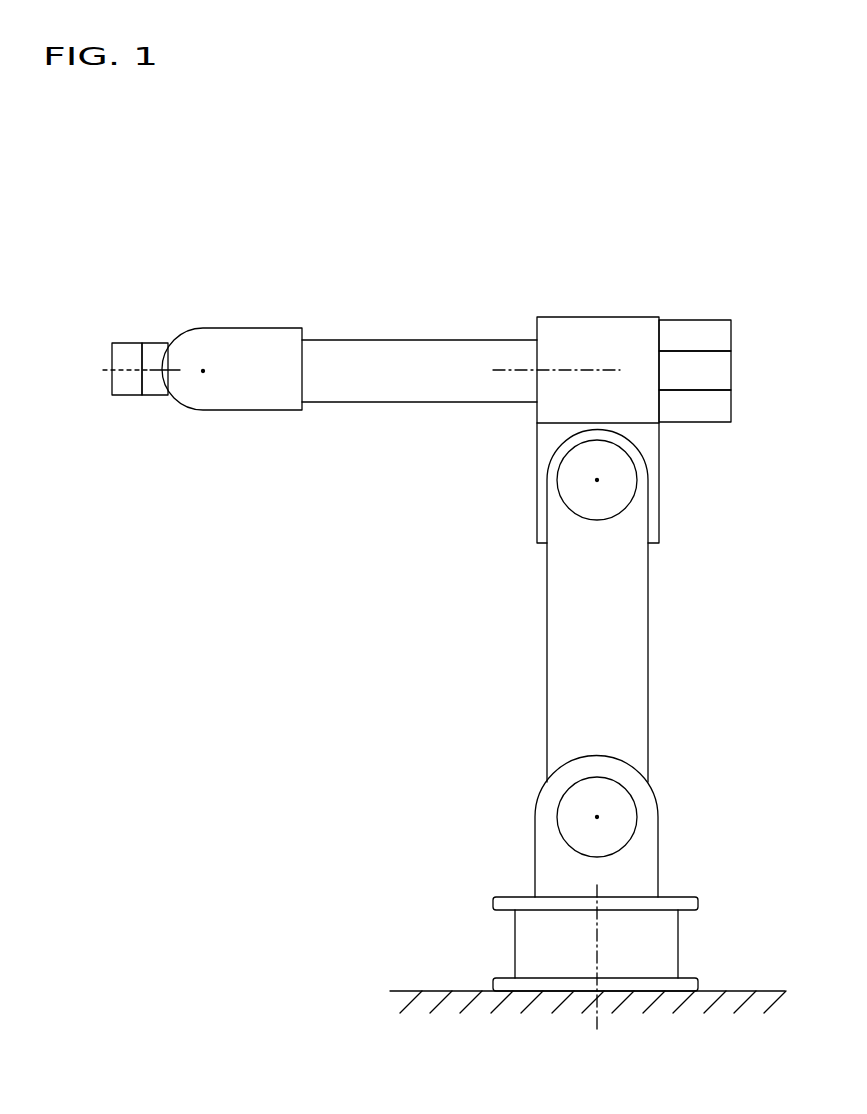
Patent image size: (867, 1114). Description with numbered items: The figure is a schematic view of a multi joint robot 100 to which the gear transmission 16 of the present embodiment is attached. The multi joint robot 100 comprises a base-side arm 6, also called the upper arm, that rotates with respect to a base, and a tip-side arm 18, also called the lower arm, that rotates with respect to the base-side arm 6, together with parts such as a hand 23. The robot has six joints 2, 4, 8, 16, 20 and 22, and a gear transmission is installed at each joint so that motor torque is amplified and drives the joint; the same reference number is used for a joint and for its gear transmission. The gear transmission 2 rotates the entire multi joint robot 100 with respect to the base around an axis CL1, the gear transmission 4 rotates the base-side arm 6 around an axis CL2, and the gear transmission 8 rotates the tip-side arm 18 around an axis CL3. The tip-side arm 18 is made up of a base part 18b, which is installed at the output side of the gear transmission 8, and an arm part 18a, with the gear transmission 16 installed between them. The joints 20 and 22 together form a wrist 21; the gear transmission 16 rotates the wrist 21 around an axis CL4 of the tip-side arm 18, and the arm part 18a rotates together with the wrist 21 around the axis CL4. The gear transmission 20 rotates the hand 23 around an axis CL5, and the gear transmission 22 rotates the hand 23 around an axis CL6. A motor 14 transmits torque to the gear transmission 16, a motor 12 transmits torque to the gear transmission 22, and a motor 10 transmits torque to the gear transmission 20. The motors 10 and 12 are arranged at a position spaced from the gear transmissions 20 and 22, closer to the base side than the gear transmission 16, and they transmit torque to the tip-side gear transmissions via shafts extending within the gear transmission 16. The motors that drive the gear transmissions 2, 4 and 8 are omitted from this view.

The multi joint robot 100 is at (708, 151).
The joint 2 is at (660, 947).
The joint 4 is at (618, 803).
The base-side arm 6 is at (637, 646).
The joint 8 is at (578, 497).
The motor 10 is at (712, 410).
The motor 12 is at (712, 368).
The motor 14 is at (712, 338).
The gear transmission 16 is at (593, 327).
The tip-side arm 18 is at (558, 374).
The arm part 18a is at (402, 352).
The base part 18b is at (653, 455).
The joint 20 is at (235, 345).
The wrist 21 is at (169, 306).
The joint 22 is at (155, 352).
The hand 23 is at (122, 352).
The axis CL1 is at (596, 970).
The axis CL2 is at (599, 820).
The axis CL3 is at (590, 479).
The axis CL4 is at (497, 368).
The axis CL5 is at (203, 376).
The axis CL6 is at (116, 371).